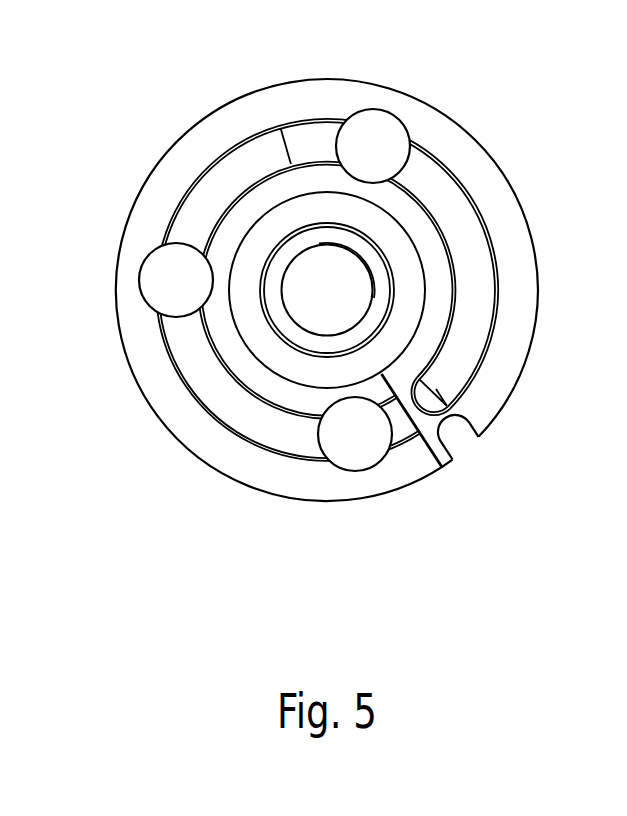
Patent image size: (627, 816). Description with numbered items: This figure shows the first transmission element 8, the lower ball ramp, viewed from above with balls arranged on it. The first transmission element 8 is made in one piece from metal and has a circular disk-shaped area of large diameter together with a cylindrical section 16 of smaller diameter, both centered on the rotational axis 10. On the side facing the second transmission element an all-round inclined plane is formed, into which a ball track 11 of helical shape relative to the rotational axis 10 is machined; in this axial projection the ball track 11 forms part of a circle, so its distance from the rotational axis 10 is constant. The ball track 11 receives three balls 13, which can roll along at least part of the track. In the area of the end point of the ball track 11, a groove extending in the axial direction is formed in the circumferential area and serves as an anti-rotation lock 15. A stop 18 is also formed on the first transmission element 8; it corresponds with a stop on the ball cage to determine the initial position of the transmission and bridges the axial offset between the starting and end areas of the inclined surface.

The first transmission element 8 is at (510, 95).
The rotational axis 10 is at (327, 290).
The ball track 11 is at (463, 227).
The balls 13 is at (373, 453).
The anti-rotation lock 15 is at (470, 450).
The cylindrical section 16 is at (395, 311).
The stop 18 is at (428, 447).